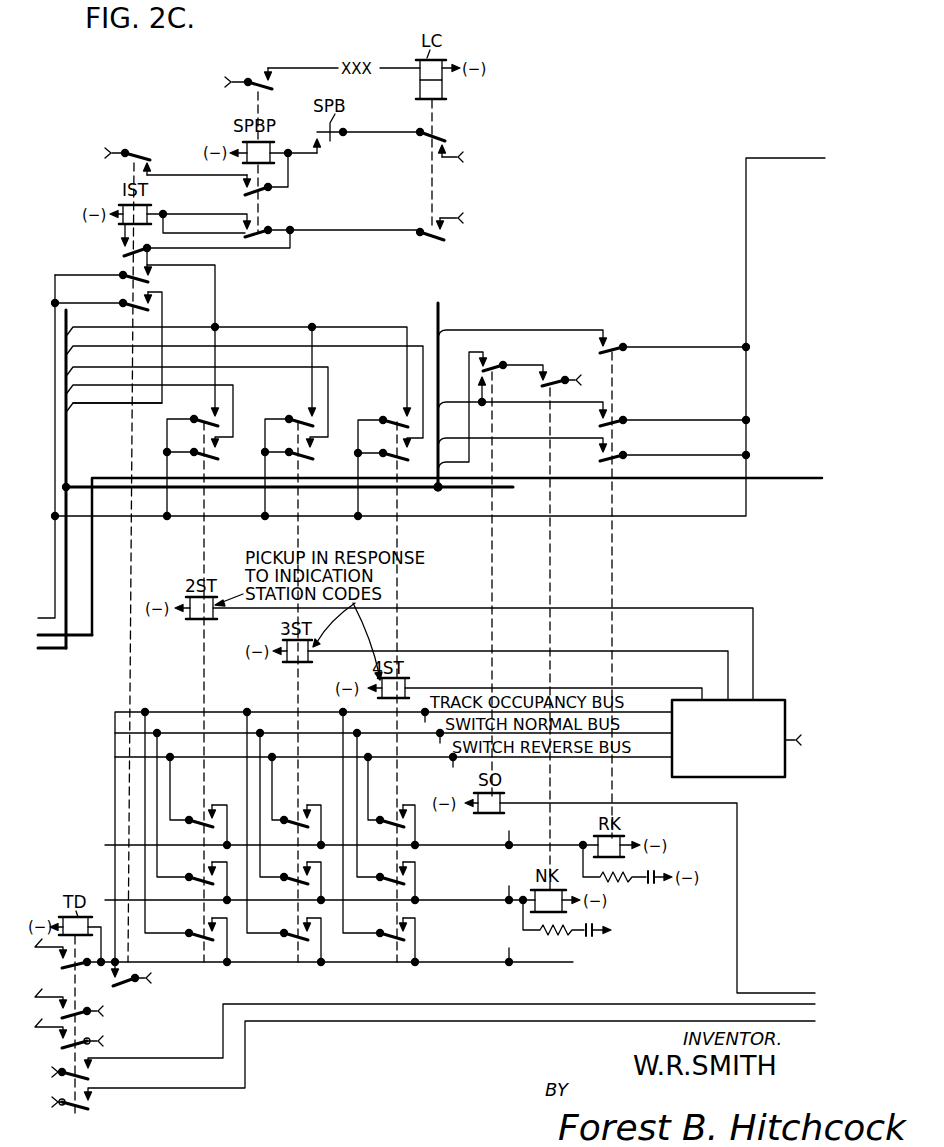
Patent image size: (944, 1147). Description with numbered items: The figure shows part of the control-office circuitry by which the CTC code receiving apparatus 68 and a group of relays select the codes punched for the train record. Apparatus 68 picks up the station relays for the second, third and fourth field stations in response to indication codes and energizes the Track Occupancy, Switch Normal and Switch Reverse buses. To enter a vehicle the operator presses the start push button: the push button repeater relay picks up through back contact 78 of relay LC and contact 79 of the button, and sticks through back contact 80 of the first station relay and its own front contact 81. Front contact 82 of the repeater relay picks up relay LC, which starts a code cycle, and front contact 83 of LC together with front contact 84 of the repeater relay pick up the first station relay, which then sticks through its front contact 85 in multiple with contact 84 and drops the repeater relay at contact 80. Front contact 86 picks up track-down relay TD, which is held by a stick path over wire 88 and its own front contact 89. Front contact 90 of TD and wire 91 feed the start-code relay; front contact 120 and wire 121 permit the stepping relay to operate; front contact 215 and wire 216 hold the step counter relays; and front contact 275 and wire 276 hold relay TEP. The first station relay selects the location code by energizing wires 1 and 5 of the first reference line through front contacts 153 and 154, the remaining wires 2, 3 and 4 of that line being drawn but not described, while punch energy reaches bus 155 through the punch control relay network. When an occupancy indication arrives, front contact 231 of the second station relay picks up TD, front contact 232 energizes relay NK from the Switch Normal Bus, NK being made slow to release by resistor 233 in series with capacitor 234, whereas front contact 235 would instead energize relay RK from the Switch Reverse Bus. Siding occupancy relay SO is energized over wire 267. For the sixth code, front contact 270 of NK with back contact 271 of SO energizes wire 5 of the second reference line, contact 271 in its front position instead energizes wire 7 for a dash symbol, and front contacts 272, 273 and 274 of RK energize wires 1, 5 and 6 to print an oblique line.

The wire 1 is at (94, 326).
The conductor 2 of cable P3 2 is at (95, 345).
The conductor 3 of cable P3 3 is at (96, 366).
The conductor 4 of cable P3 4 is at (96, 384).
The wire 5 is at (104, 402).
The wire 6 is at (468, 437).
The wire 7 is at (468, 461).
The CTC code receiving apparatus 68 is at (762, 778).
The back contact of relay LC 78 is at (423, 141).
The contact of push button SPB 79 is at (340, 140).
The back contact of relay 1ST 80 is at (146, 160).
The front contact of relay SPBP 81 is at (256, 194).
The front contact of relay SPBP 82 is at (262, 76).
The front contact of relay LC 83 is at (441, 242).
The front contact of relay SPBP 84 is at (258, 233).
The front contact of relay 1ST 85 is at (121, 259).
The front contact of relay 1ST 86 is at (130, 987).
The wire 88 is at (61, 957).
The front contact of relay TD 89 is at (130, 975).
The front contact of relay TD 90 is at (78, 1044).
The wire 91 is at (80, 1036).
The front contact of relay TD 120 is at (90, 1076).
The wire 121 is at (720, 1006).
The front contact of relay 1ST 153 is at (151, 279).
The front contact of relay 1ST 154 is at (124, 303).
The punch energy bus 155 is at (41, 624).
The front contact of relay TD 215 is at (67, 1109).
The wire 216 is at (782, 1027).
The front contact of relay 2ST 231 is at (200, 935).
The front contact of relay 2ST 232 is at (204, 880).
The resistor 233 is at (556, 934).
The capacitor 234 is at (593, 937).
The front contact of relay 2ST 235 is at (202, 818).
The wire 267 is at (770, 993).
The front contact of relay NK 270 is at (556, 383).
The contact of relay SO 271 is at (498, 367).
The front contact of relay RK 272 is at (618, 349).
The front contact of relay RK 273 is at (618, 423).
The front contact of relay RK 274 is at (618, 458).
The front contact of relay TD 275 is at (80, 1014).
The wire 276 is at (80, 997).